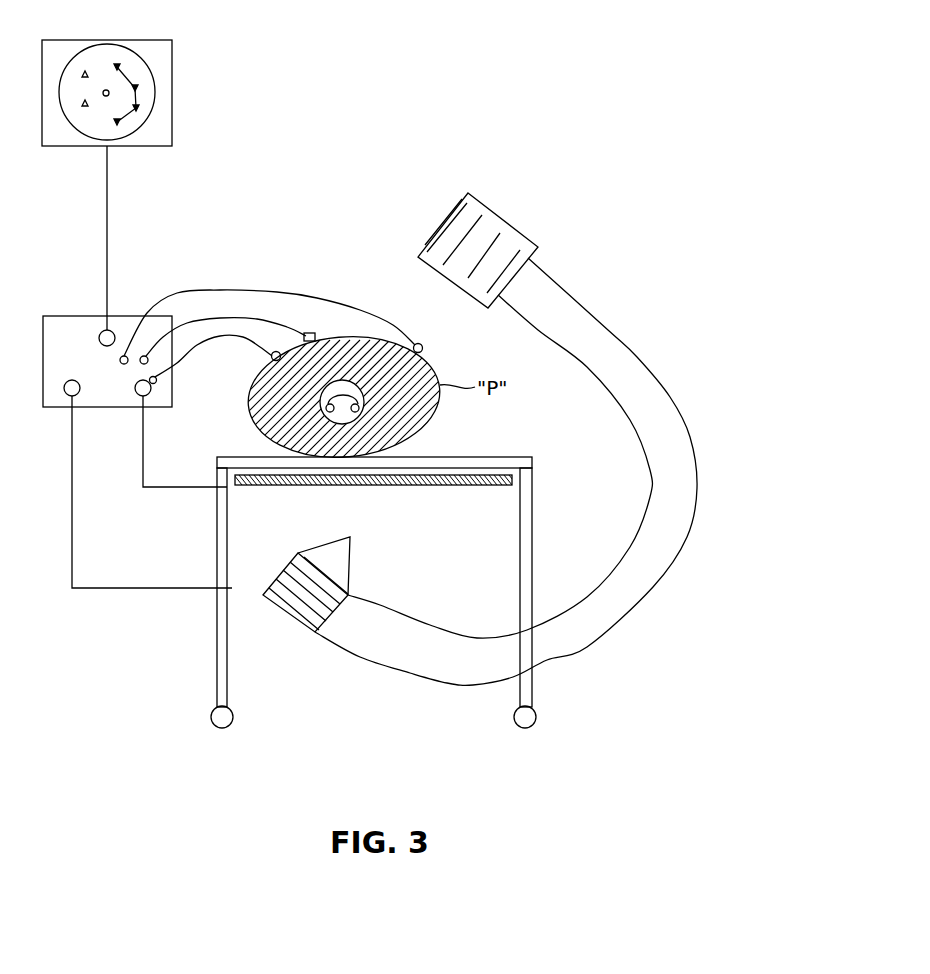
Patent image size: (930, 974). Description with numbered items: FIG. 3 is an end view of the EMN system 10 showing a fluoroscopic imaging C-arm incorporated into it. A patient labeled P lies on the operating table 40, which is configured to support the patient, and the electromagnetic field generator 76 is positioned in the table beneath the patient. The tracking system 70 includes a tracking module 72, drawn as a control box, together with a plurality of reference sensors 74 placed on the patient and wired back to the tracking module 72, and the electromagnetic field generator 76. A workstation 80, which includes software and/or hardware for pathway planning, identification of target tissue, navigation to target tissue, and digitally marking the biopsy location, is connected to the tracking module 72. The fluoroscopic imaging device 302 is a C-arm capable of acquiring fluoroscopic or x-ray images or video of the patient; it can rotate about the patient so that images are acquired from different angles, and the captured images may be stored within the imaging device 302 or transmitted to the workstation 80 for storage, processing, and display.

The EMN system 10 is at (522, 122).
The operating table 40 is at (403, 592).
The tracking system 70 is at (128, 436).
The tracking module 72 is at (56, 296).
The reference sensors 74 is at (276, 352).
The electromagnetic field generator 76 is at (425, 487).
The workstation 80 is at (175, 58).
The fluoroscopic imaging device 302 is at (560, 303).